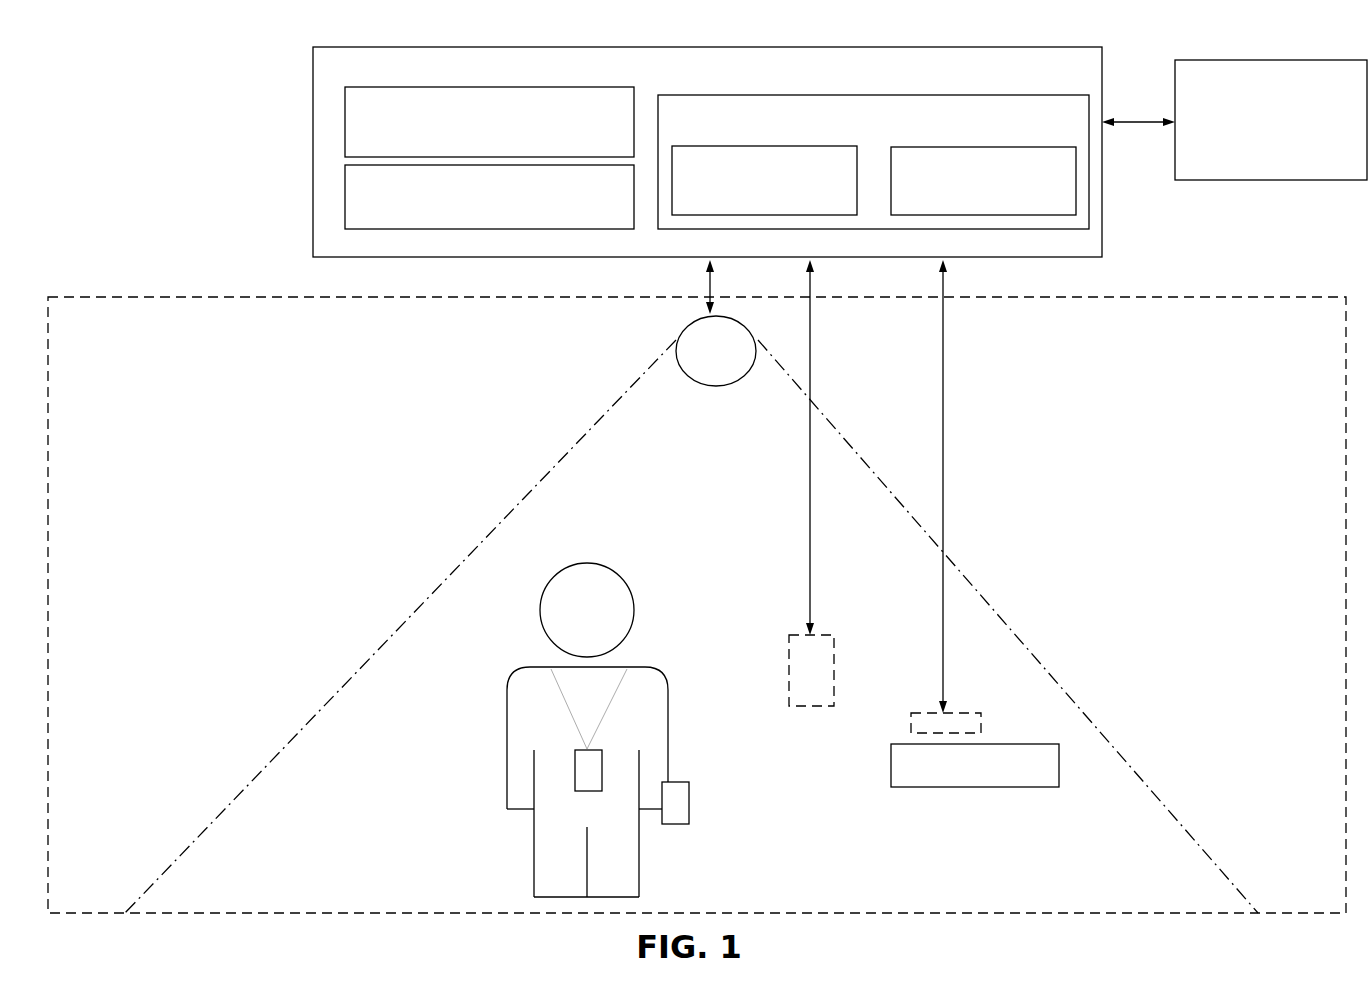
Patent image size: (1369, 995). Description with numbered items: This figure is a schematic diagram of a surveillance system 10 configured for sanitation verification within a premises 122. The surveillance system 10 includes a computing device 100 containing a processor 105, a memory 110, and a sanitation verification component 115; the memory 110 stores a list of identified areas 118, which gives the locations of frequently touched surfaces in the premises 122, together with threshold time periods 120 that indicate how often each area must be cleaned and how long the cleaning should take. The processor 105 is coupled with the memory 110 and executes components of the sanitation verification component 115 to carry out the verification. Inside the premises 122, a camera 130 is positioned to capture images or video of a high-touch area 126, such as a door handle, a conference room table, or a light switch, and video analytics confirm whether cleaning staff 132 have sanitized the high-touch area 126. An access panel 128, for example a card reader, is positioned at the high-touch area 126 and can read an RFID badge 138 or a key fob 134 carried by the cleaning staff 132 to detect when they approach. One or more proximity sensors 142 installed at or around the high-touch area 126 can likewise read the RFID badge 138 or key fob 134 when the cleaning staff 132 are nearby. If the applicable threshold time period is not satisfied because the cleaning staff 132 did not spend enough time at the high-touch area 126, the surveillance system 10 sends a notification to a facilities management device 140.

The surveillance system 10 is at (128, 107).
The computing device 100 is at (707, 152).
The processor 105 is at (489, 122).
The memory 110 is at (873, 162).
The sanitation verification component 115 is at (489, 197).
The identified areas 118 is at (764, 180).
The threshold time periods 120 is at (983, 181).
The premises 122 is at (1194, 297).
The high-touch area 126 is at (995, 744).
The access panel 128 is at (798, 635).
The camera 130 is at (714, 386).
The cleaning staff 132 is at (588, 563).
The key fob 134 is at (676, 824).
The RFID badge 138 is at (602, 763).
The facilities management device 140 is at (1271, 120).
The proximity sensor 142 is at (930, 713).